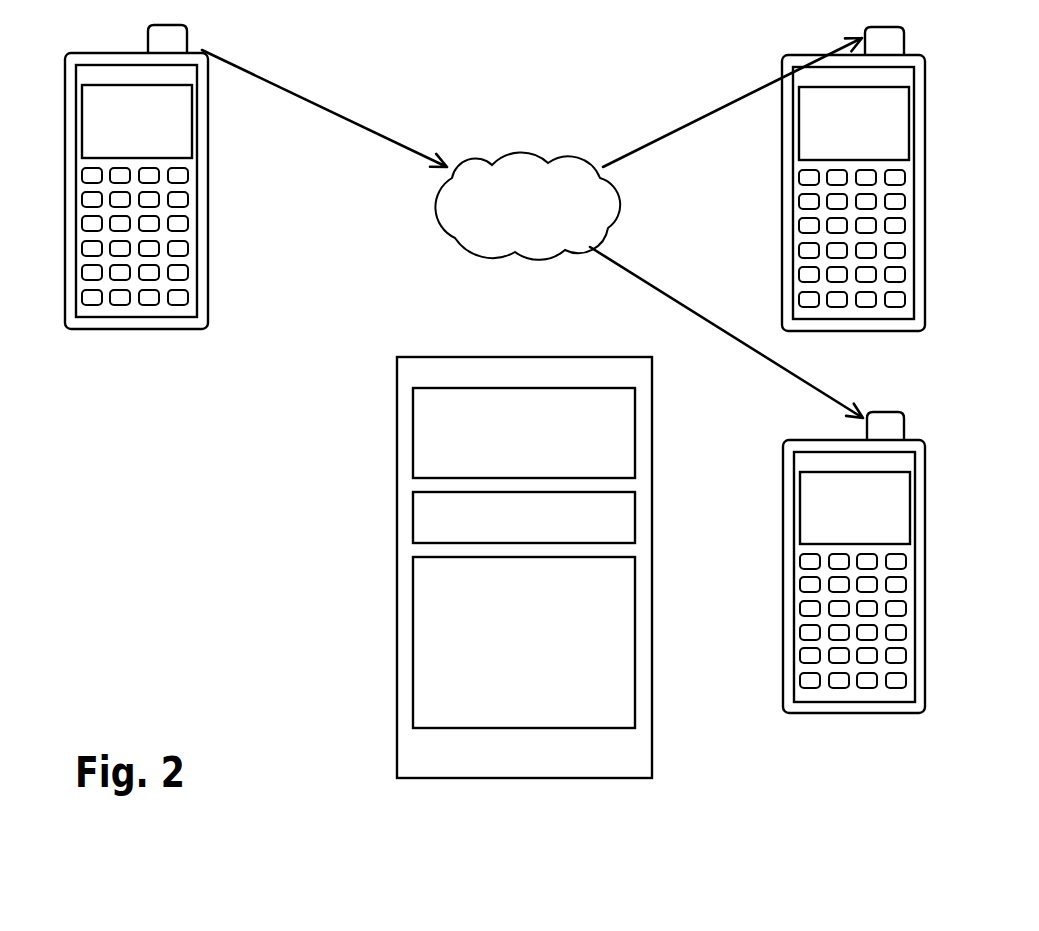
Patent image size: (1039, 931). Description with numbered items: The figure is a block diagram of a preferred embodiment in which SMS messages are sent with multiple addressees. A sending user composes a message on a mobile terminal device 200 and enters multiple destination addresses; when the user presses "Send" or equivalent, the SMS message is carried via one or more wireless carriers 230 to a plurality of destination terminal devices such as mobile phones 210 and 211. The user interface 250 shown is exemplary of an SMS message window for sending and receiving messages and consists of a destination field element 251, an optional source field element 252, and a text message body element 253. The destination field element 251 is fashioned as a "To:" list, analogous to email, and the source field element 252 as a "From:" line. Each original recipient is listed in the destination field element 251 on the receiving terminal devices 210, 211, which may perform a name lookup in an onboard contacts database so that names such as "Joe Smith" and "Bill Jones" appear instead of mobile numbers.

The mobile terminal device 200 is at (207, 328).
The mobile phone 210 is at (925, 320).
The mobile phone 211 is at (925, 705).
The wireless carrier 230 is at (533, 258).
The user interface 250 is at (653, 738).
The destination field element 251 is at (637, 440).
The source field element 252 is at (637, 517).
The text message body element 253 is at (637, 578).